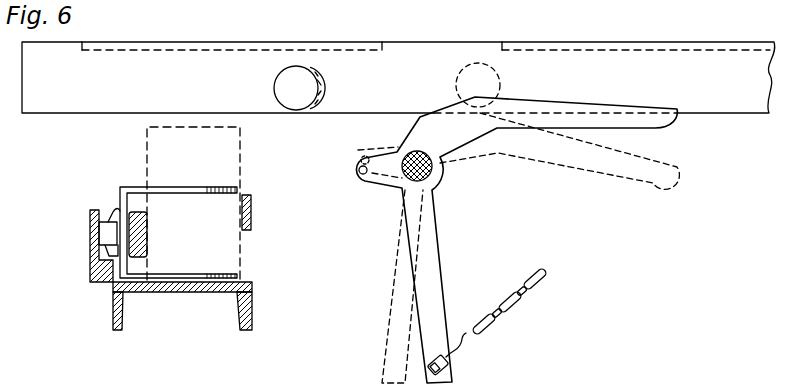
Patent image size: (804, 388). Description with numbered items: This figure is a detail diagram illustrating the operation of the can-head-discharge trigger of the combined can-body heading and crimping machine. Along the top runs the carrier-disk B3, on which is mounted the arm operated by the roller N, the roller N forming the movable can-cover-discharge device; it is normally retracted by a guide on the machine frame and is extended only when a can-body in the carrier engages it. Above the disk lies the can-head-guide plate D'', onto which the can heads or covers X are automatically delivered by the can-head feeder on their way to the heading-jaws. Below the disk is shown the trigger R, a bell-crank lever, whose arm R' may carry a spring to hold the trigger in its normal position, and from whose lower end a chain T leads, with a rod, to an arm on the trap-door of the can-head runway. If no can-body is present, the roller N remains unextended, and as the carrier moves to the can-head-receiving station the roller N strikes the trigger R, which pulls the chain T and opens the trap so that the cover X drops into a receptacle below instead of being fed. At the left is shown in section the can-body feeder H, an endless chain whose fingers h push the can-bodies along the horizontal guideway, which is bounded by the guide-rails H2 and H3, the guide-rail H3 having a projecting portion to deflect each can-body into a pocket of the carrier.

The carrier-disk B3 is at (412, 42).
The can-head-guide plate D'' is at (426, 25).
The roller N is at (500, 84).
The trigger R is at (517, 240).
The arm R' is at (374, 181).
The chain T is at (542, 288).
The fingers h is at (240, 187).
The guide-rail H2 is at (271, 218).
The can-body feeder H is at (108, 220).
The guide-rail H3 is at (140, 244).
The can head or cover X is at (240, 247).